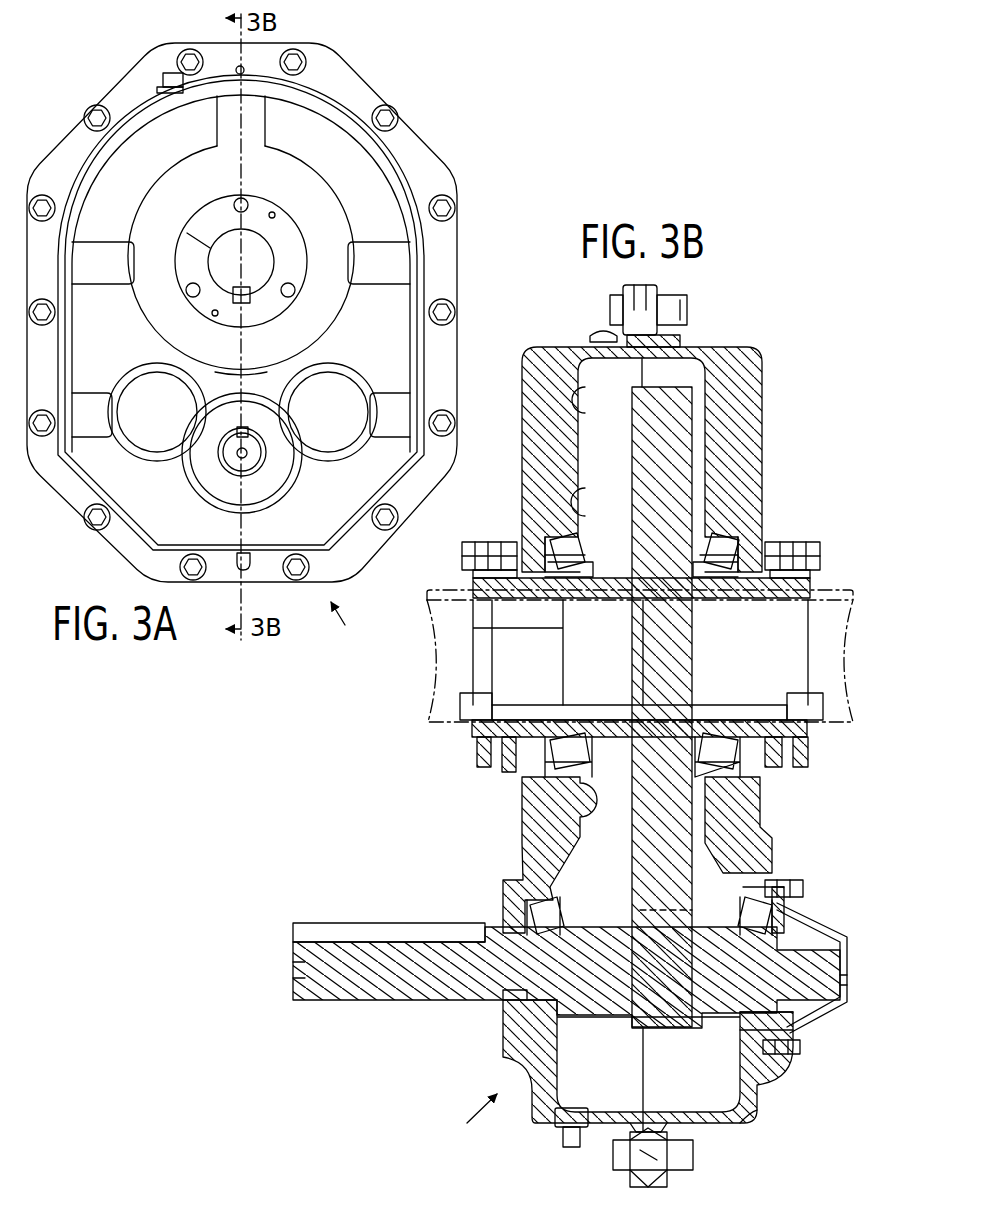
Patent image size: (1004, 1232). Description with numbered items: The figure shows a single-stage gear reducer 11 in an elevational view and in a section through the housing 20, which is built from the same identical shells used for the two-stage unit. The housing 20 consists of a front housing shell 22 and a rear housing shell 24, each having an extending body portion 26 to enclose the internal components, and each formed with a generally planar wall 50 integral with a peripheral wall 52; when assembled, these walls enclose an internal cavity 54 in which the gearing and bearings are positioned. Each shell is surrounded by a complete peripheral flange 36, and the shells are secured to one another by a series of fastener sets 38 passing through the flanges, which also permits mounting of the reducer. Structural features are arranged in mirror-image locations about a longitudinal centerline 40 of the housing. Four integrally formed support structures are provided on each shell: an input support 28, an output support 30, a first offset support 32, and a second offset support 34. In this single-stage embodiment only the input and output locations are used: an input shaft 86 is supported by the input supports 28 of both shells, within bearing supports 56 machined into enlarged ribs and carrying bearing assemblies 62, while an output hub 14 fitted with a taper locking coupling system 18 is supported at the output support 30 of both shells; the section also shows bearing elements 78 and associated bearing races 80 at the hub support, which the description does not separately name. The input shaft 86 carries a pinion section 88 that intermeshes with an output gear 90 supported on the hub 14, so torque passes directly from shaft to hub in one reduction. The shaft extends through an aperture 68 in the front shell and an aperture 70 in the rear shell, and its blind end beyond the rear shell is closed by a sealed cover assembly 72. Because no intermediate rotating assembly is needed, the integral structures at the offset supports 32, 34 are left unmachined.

In FIG. 3A, the single-stage gear reducer 11 is at (348, 628).
In FIG. 3B, the single-stage gear reducer 11 is at (472, 1123).
In FIG. 3A, the output hub 14 is at (206, 289).
In FIG. 3B, the output hub 14 is at (754, 575).
In FIG. 3A, the taper locking coupling system 18 is at (188, 266).
In FIG. 3B, the taper locking coupling system 18 is at (462, 753).
In FIG. 3A, the housing 20 is at (438, 148).
In FIG. 3B, the housing 20 is at (503, 1040).
In FIG. 3A, the front housing shell 22 is at (346, 73).
In FIG. 3B, the front housing shell 22 is at (538, 1123).
In FIG. 3B, the rear housing shell 24 is at (750, 1123).
In FIG. 3A, the extending body portion 26 is at (362, 170).
In FIG. 3A, the input support 28 is at (215, 487).
In FIG. 3B, the input support 28 is at (508, 898).
In FIG. 3A, the output support 30 is at (148, 228).
In FIG. 3A, the first offset support 32 is at (136, 384).
In FIG. 3A, the second offset support 34 is at (340, 453).
In FIG. 3A, the peripheral flange 36 is at (405, 135).
In FIG. 3A, the fastener sets 38 is at (42, 208).
In FIG. 3B, the fastener sets 38 is at (675, 290).
In FIG. 3A, the longitudinal centerline 40 is at (240, 575).
In FIG. 3B, the planar wall 50 is at (503, 1023).
In FIG. 3B, the peripheral wall 52 is at (613, 1123).
In FIG. 3B, the internal cavity 54 is at (703, 1078).
In FIG. 3B, the bearing support 56 is at (512, 878).
In FIG. 3B, the bearing assemblies 62 is at (548, 904).
In FIG. 3B, the aperture 68 is at (503, 1003).
In FIG. 3B, the aperture 70 is at (793, 1032).
In FIG. 3B, the sealed cover assembly 72 is at (847, 1003).
In FIG. 3B, the tapered roller bearings 78 is at (551, 540).
In FIG. 3B, the bearing race 80 is at (547, 563).
In FIG. 3A, the input shaft 86 is at (228, 458).
In FIG. 3B, the input shaft 86 is at (376, 993).
In FIG. 3B, the pinion section 88 is at (643, 1022).
In FIG. 3B, the output gear 90 is at (645, 433).